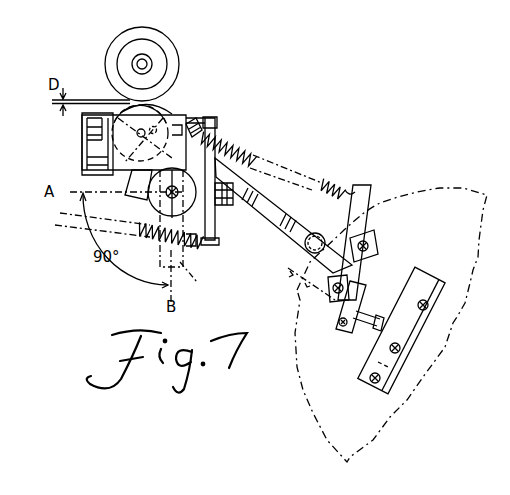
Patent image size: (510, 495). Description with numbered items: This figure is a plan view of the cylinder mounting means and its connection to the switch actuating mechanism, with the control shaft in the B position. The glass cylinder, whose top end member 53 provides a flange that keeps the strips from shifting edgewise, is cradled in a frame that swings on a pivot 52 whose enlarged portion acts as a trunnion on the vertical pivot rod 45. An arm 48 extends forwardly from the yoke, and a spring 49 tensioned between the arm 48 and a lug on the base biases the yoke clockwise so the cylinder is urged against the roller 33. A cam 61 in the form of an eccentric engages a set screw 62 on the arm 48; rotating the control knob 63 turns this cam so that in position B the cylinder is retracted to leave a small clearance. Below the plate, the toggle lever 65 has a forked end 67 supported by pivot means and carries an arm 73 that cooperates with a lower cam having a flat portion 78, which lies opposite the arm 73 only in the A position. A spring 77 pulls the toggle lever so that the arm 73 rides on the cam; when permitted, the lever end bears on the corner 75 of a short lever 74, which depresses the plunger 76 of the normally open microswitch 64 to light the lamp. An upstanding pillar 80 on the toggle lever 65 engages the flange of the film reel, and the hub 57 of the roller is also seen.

The roller 33 is at (178, 52).
The wheel hub 57 is at (147, 62).
The forked end 67 is at (130, 112).
The top end member 53 is at (172, 105).
The pivot 52 is at (195, 117).
The pivot rod 45 is at (207, 118).
The arm 48 is at (218, 241).
The set screw 62 is at (228, 206).
The arm 73 is at (135, 195).
The flat portion 78 is at (160, 212).
The cam 61 is at (168, 243).
The spring 49 is at (196, 248).
The control knob 63 is at (198, 282).
The spring 77 is at (246, 158).
The toggle lever 65 is at (289, 195).
The upstanding pillar 80 is at (317, 234).
The corner 75 is at (358, 277).
The short lever 74 is at (349, 296).
The plunger 76 is at (351, 333).
The microswitch 64 is at (413, 268).